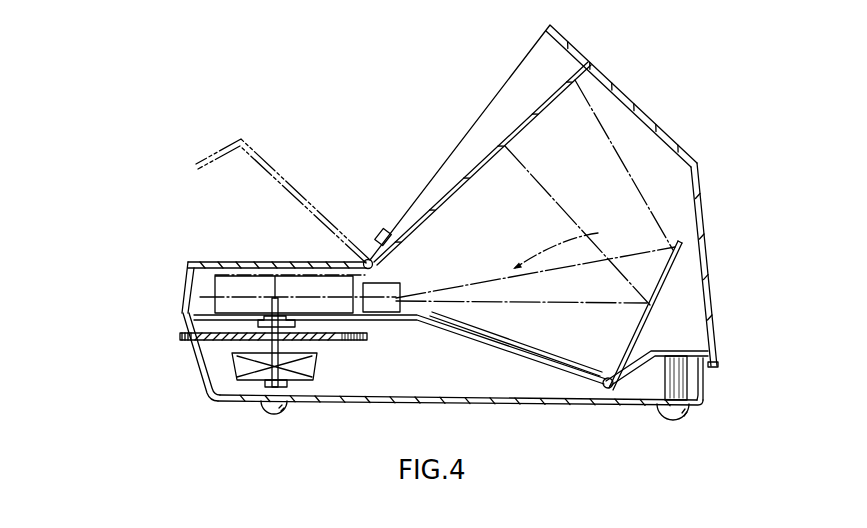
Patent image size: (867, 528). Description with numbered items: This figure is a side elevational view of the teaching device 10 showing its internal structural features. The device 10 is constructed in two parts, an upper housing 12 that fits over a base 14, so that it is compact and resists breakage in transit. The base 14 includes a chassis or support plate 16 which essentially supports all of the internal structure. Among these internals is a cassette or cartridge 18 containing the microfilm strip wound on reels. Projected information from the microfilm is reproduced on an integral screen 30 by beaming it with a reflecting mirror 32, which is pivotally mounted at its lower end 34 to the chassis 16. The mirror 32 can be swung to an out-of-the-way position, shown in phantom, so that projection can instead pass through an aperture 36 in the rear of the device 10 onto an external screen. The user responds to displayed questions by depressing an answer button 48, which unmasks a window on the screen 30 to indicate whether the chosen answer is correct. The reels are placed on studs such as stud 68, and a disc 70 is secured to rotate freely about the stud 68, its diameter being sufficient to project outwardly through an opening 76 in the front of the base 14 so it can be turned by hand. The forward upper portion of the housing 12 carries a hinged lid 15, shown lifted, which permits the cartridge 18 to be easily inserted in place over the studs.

The teaching device 10 is at (567, 196).
The upper housing 12 is at (681, 148).
The base 14 is at (490, 392).
The hinged lid 15 is at (273, 172).
The chassis 16 is at (393, 315).
The cassette 18 is at (223, 260).
The screen 30 is at (493, 146).
The reflecting mirror 32 is at (520, 333).
The lower end 34 is at (607, 392).
The aperture 36 is at (704, 213).
The answer button 48 is at (383, 228).
The stud 68 is at (274, 298).
The disc 70 is at (183, 343).
The opening 76 is at (182, 332).